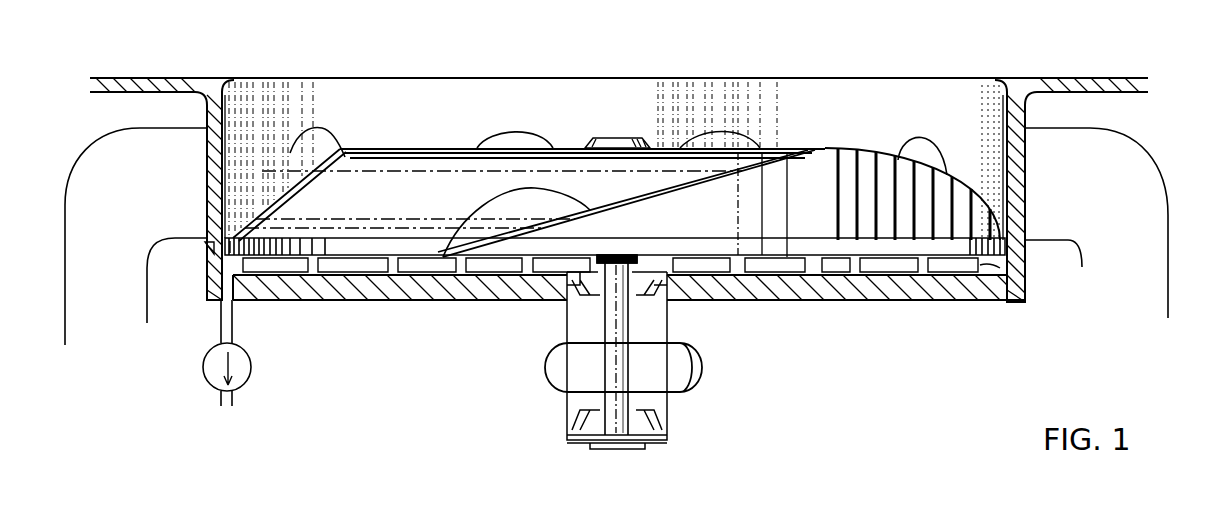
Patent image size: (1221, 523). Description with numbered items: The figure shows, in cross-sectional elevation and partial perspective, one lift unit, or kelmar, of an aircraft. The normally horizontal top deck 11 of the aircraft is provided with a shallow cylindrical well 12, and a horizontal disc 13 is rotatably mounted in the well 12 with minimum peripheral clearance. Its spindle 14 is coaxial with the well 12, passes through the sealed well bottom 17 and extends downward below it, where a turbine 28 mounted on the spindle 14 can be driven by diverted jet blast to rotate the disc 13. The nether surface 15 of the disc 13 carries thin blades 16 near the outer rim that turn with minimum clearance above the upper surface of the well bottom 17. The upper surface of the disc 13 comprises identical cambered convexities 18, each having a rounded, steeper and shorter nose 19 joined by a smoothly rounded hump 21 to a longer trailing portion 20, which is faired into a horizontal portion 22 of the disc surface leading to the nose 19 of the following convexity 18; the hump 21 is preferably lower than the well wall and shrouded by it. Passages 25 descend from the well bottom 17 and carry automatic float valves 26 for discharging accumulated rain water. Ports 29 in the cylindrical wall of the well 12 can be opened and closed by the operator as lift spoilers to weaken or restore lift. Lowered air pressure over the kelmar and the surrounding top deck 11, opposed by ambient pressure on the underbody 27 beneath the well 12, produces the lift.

The top deck 11 is at (1083, 78).
The well 12 is at (987, 102).
The disc 13 is at (618, 138).
The spindle 14 is at (613, 308).
The nether surface 15 is at (713, 260).
The blades 16 is at (283, 262).
The well bottom 17 is at (990, 268).
The cambered convexity 18 is at (820, 157).
The nose 19 is at (288, 210).
The trailing portion 20 is at (443, 257).
The hump 21 is at (415, 148).
The horizontal portion 22 is at (204, 252).
The passages 25 is at (225, 312).
The automatic float valve 26 is at (210, 353).
The underbody 27 is at (955, 303).
The turbine 28 is at (660, 376).
The ports 29 is at (313, 147).